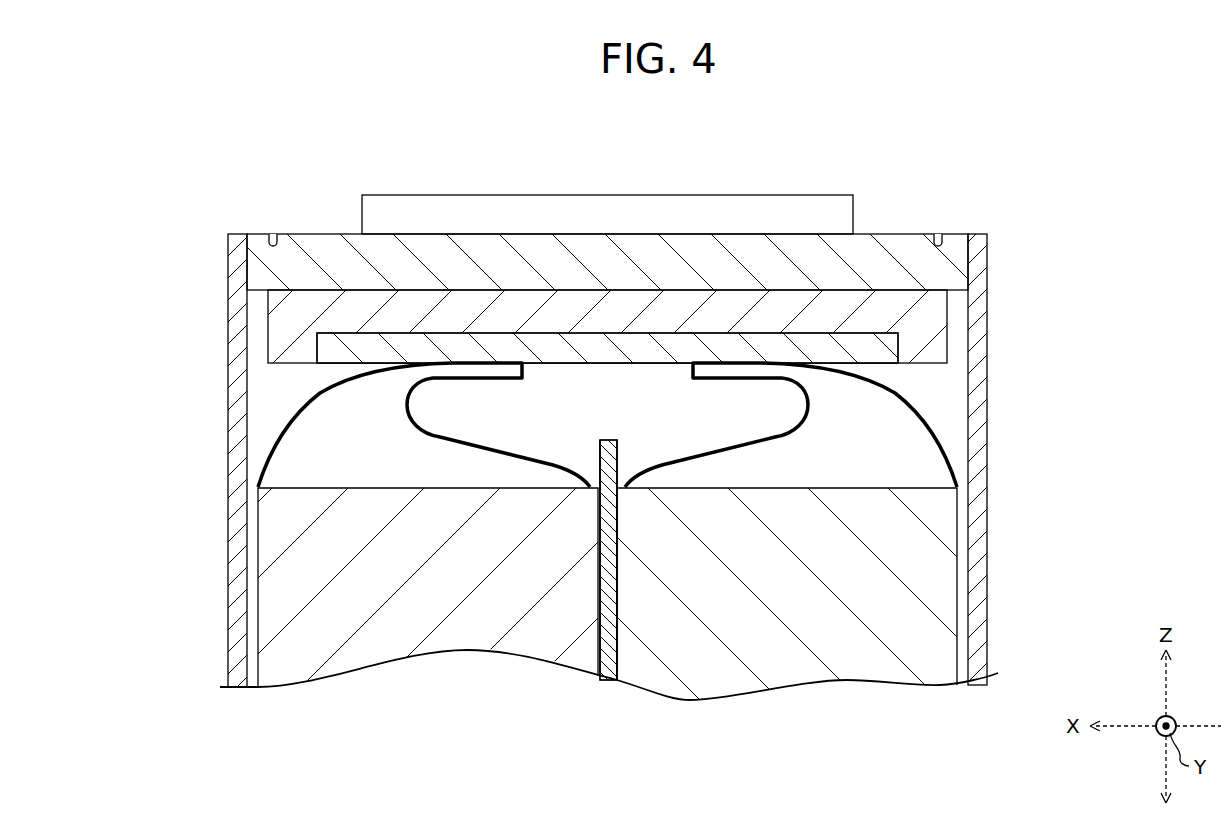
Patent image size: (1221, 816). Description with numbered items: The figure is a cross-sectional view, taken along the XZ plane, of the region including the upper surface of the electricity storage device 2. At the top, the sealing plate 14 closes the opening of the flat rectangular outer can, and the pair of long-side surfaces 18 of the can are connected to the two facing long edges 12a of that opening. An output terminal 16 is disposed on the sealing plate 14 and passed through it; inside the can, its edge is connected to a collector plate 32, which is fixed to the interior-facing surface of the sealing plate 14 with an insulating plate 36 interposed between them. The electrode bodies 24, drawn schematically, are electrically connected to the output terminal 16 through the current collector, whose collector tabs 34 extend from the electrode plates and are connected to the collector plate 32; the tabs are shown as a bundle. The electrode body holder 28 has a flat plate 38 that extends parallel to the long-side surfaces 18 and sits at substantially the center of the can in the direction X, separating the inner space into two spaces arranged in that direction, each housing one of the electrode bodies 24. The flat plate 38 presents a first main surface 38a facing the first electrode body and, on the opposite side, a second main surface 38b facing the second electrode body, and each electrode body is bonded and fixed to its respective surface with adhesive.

The electricity storage device 2 is at (616, 802).
The long edge of opening 12a is at (256, 233).
The sealing plate 14 is at (902, 248).
The output terminal 16 is at (800, 193).
The long-side surface 18 is at (228, 467).
The electrode body 24 is at (270, 553).
The electrode body holder 28 is at (607, 438).
The collector plate 32 is at (907, 348).
The collector tab 34 is at (300, 412).
The insulating plate 36 is at (932, 312).
The flat plate 38 is at (603, 649).
The first main surface 38a is at (618, 632).
The second main surface 38b is at (598, 622).